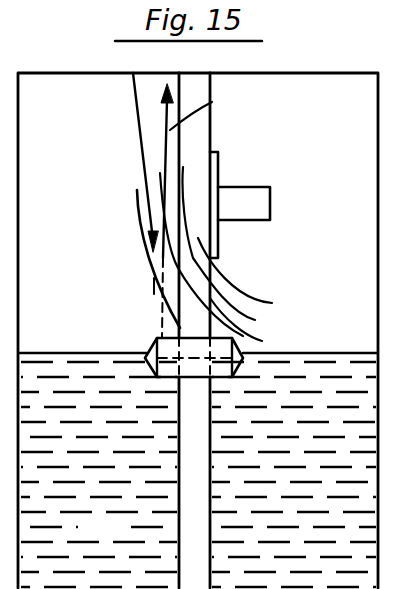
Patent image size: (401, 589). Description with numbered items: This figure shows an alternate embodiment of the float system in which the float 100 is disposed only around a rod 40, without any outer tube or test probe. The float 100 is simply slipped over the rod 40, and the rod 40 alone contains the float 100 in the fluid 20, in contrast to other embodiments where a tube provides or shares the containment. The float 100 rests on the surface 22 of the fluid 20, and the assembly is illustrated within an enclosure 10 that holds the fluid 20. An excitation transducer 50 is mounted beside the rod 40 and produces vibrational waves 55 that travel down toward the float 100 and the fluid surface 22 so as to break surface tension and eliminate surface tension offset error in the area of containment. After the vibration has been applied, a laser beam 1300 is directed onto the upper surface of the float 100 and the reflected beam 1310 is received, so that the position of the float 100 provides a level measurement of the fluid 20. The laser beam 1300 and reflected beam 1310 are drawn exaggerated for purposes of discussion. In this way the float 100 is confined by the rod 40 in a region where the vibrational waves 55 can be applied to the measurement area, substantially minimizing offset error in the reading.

The tank 10 is at (325, 266).
The fluid 20 is at (117, 540).
The fluid surface 22 is at (75, 353).
The rod 40 is at (197, 138).
The excitation transducer 50 is at (247, 184).
The vibrational waves 55 is at (140, 240).
The float 100 is at (243, 348).
The laser beam 1300 is at (138, 128).
The reflected laser beam 1310 is at (212, 102).